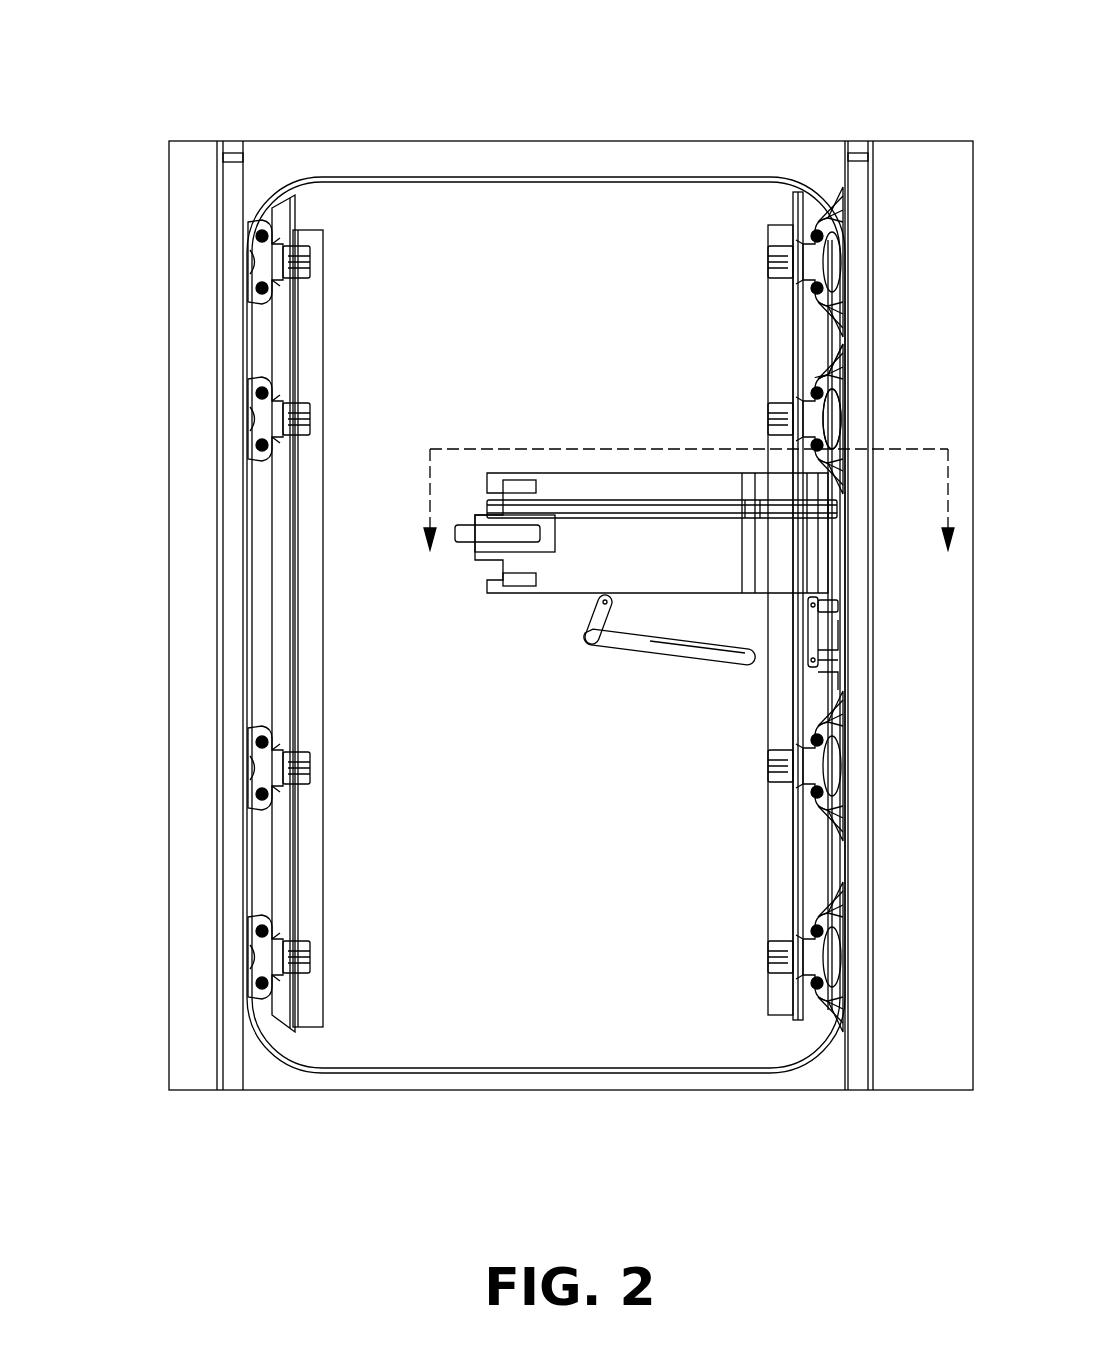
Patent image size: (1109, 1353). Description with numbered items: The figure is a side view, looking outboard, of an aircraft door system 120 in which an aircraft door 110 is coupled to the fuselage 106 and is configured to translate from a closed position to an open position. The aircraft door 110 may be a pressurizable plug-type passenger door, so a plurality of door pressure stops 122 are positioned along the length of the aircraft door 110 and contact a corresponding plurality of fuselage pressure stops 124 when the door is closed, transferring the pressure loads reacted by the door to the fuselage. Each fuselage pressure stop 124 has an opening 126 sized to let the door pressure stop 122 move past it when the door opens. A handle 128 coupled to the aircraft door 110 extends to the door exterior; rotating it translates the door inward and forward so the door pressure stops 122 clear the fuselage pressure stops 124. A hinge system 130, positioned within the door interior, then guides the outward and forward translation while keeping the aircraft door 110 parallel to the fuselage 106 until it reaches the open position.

The aircraft door system 120 is at (122, 50).
The aircraft door 110 is at (600, 190).
The fuselage 106 is at (873, 235).
The door pressure stop 122 is at (803, 392).
The fuselage pressure stop 124 is at (820, 372).
The opening 126 is at (843, 410).
The hinge system 130 is at (648, 503).
The handle 128 is at (635, 660).